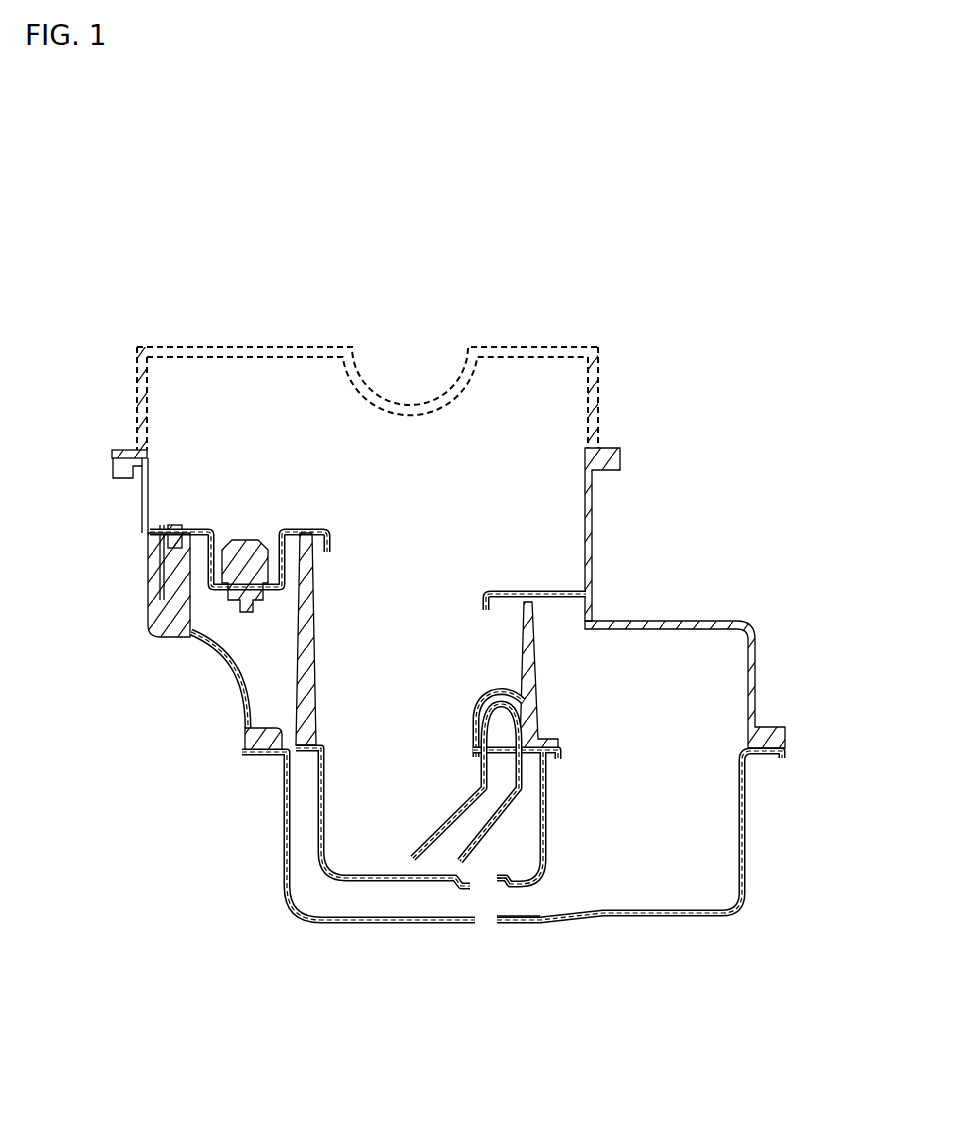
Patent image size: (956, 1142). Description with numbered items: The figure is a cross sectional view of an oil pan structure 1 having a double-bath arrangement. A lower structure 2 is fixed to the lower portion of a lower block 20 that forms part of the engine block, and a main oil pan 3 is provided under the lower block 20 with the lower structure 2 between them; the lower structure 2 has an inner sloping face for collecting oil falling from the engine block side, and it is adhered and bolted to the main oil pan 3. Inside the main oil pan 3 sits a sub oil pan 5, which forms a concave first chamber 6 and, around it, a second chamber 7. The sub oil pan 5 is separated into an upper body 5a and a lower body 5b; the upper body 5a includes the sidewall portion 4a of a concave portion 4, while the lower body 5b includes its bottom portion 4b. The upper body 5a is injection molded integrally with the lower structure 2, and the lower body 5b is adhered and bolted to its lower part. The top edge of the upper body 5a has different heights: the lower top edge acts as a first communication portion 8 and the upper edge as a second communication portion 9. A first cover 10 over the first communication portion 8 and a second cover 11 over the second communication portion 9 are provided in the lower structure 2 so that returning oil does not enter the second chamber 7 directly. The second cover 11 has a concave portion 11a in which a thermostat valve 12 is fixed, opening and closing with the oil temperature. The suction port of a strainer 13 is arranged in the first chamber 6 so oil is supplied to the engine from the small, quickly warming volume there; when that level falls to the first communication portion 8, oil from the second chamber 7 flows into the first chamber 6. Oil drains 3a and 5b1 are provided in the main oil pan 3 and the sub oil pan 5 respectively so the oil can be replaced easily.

The oil pan structure 1 is at (783, 990).
The lower structure 2 is at (592, 518).
The main oil pan 3 is at (748, 828).
The oil drain 3a is at (492, 912).
The concave portion 4 is at (353, 760).
The sidewall portion 4a is at (300, 643).
The bottom portion 4b is at (383, 879).
The sub oil pan 5 is at (682, 540).
The upper body 5a is at (528, 690).
The lower body 5b is at (545, 790).
The oil drain 5b1 is at (497, 884).
The first chamber 6 is at (343, 777).
The second chamber 7 is at (313, 898).
The first communication portion 8 is at (522, 601).
The second communication portion 9 is at (313, 538).
The first cover 10 is at (502, 590).
The second cover 11 is at (201, 531).
The concave portion 11a is at (216, 532).
The thermostat valve 12 is at (252, 540).
The strainer 13 is at (499, 825).
The lower block 20 is at (600, 383).